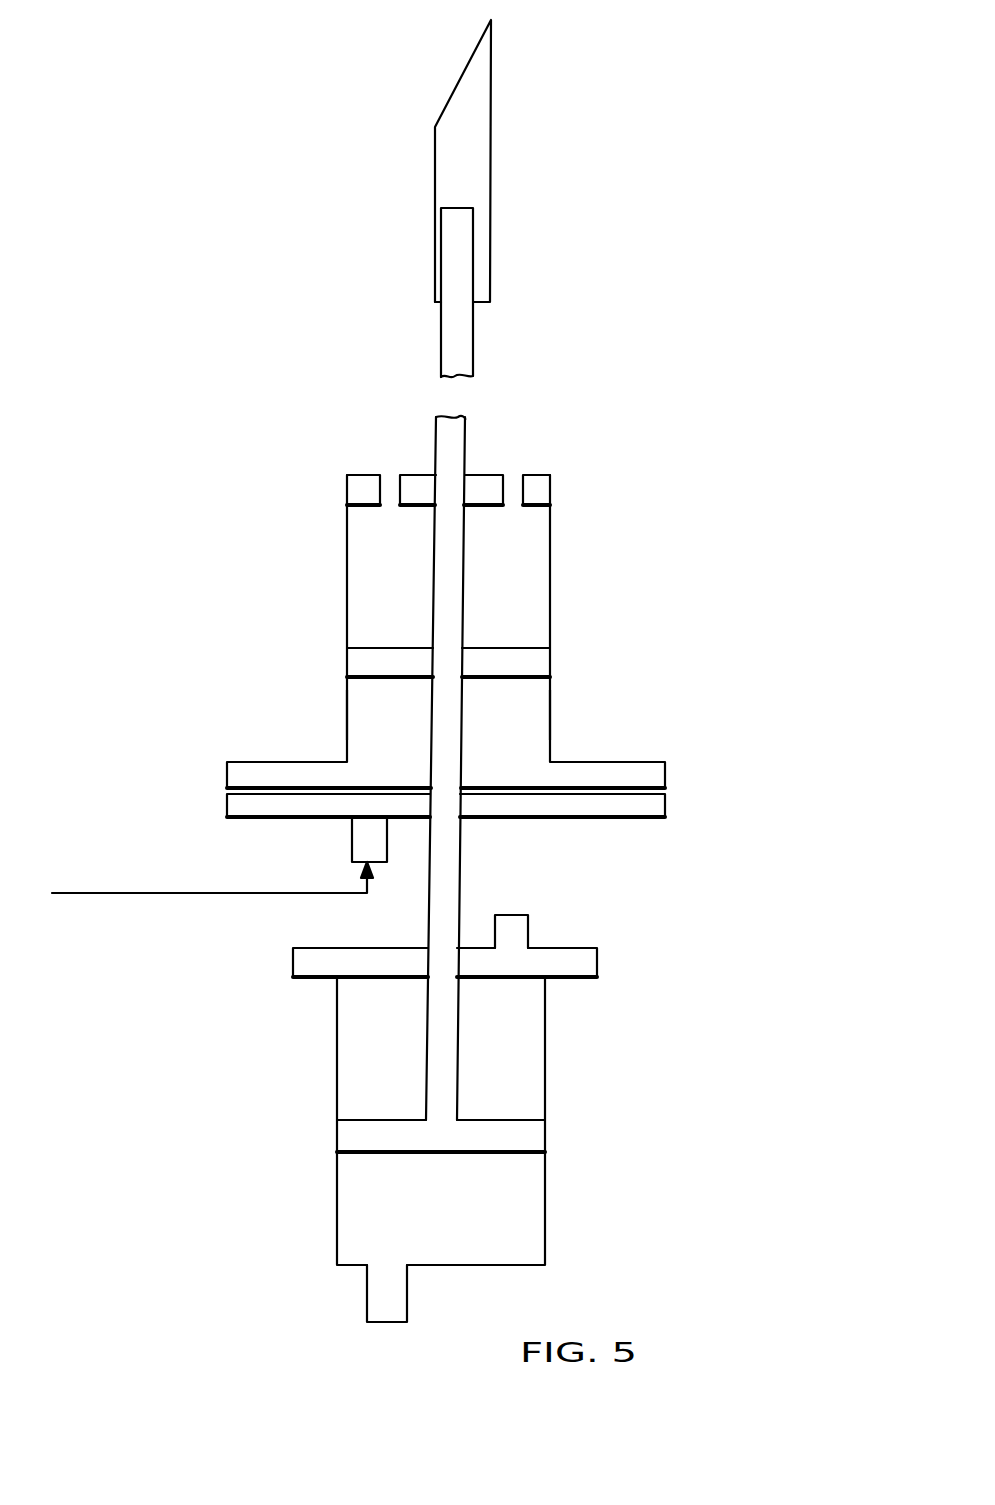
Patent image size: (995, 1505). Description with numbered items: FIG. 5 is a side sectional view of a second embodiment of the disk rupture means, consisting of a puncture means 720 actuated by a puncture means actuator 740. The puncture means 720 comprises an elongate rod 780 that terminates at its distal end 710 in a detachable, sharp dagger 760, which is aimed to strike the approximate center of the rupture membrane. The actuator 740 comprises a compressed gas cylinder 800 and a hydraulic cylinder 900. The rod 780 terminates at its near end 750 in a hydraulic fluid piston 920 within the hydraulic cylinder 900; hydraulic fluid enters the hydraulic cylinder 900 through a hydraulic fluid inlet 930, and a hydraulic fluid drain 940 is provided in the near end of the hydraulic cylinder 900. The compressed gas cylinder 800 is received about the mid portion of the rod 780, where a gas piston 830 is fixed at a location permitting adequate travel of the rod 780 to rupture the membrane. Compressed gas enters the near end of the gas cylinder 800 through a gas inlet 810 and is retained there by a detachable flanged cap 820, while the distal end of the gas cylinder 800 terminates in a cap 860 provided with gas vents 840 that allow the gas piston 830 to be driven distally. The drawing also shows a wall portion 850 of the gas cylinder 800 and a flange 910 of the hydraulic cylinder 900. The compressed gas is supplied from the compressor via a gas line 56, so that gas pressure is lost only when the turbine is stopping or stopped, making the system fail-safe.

The gas line 56 is at (80, 893).
The distal end 710 is at (452, 234).
The puncture means 720 is at (510, 242).
The puncture means actuator 740 is at (718, 537).
The near end 750 is at (440, 1105).
The dagger 760 is at (472, 148).
The elongate rod 780 is at (458, 446).
The compressed gas cylinder 800 is at (551, 620).
The gas inlet 810 is at (352, 838).
The detachable flanged cap 820 is at (665, 807).
The gas piston 830 is at (360, 660).
The gas vents 840 is at (387, 483).
The housing wall 850 is at (551, 702).
The cap 860 is at (538, 490).
The hydraulic cylinder 900 is at (545, 1027).
The flange 910 is at (597, 957).
The hydraulic fluid piston 920 is at (530, 1135).
The hydraulic fluid inlet 930 is at (515, 927).
The hydraulic fluid drain 940 is at (380, 1287).